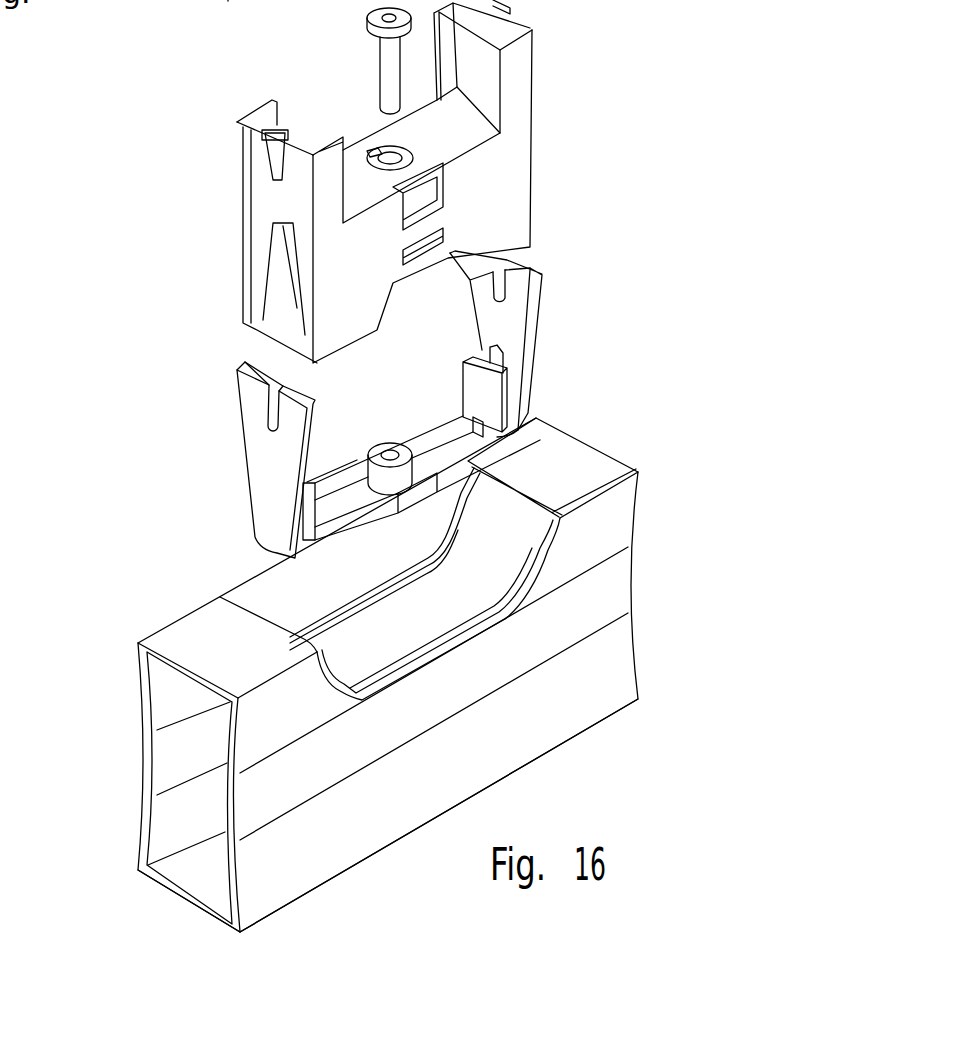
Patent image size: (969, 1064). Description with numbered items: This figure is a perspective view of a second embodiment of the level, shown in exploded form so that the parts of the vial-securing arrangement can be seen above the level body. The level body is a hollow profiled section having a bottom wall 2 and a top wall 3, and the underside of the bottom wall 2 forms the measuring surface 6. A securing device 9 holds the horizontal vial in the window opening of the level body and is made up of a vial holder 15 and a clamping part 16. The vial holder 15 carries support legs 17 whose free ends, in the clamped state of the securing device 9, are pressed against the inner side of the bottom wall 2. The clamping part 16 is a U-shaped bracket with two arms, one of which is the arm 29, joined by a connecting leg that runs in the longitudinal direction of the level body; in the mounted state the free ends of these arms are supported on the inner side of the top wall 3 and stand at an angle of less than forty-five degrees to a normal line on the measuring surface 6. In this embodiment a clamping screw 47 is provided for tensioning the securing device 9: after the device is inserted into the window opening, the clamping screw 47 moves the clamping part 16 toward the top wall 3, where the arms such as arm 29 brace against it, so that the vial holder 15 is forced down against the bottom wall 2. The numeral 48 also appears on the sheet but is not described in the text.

The bottom wall 2 is at (162, 883).
The top wall 3 is at (180, 663).
The measuring surface 6 is at (188, 920).
The securing device 9 is at (140, 335).
The vial holder 15 is at (578, 160).
The clamping part 16 is at (592, 339).
The support legs 17 is at (240, 318).
The arm 29 is at (266, 447).
The clamping screw 47 is at (392, 84).
The reference from adjacent figure 48 is at (230, 13).